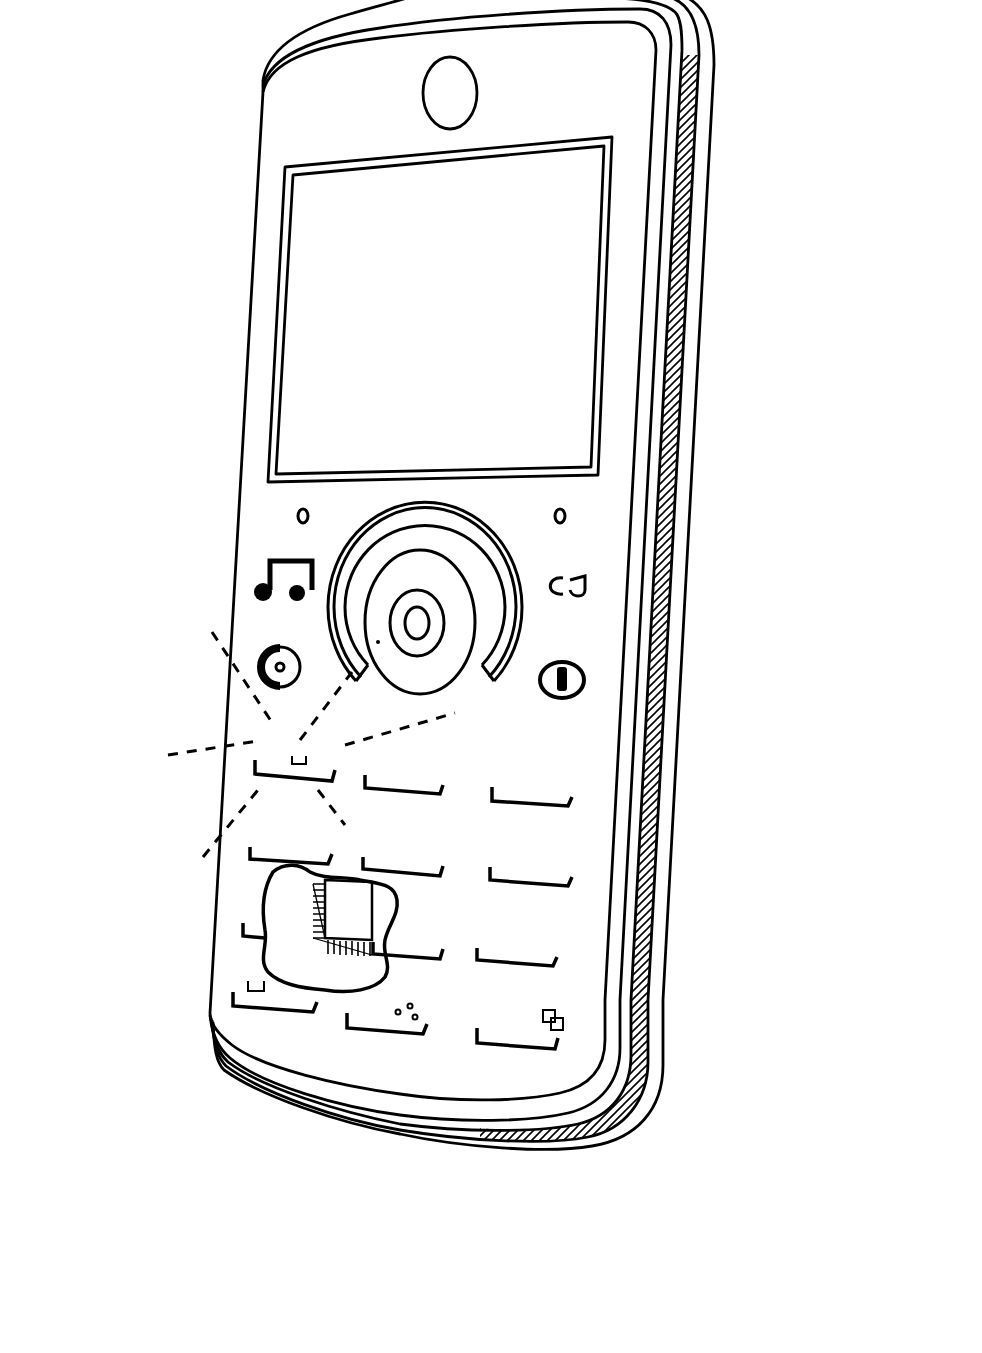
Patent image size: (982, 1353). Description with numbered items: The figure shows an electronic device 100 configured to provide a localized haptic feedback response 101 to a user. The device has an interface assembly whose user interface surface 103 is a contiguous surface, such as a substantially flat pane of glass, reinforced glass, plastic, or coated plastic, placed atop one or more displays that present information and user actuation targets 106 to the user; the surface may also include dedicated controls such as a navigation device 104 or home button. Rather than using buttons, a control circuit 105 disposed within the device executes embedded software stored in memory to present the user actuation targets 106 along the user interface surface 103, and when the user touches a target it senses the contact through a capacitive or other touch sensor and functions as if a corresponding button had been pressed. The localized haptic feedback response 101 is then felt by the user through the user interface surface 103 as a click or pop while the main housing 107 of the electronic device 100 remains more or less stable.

The electronic device 100 is at (186, 602).
The localized haptic feedback response 101 is at (197, 756).
The user interface surface 103 is at (604, 982).
The navigation key 104 is at (400, 555).
The control circuit 105 is at (343, 902).
The user actuation targets 106 is at (580, 923).
The main housing 107 is at (693, 492).